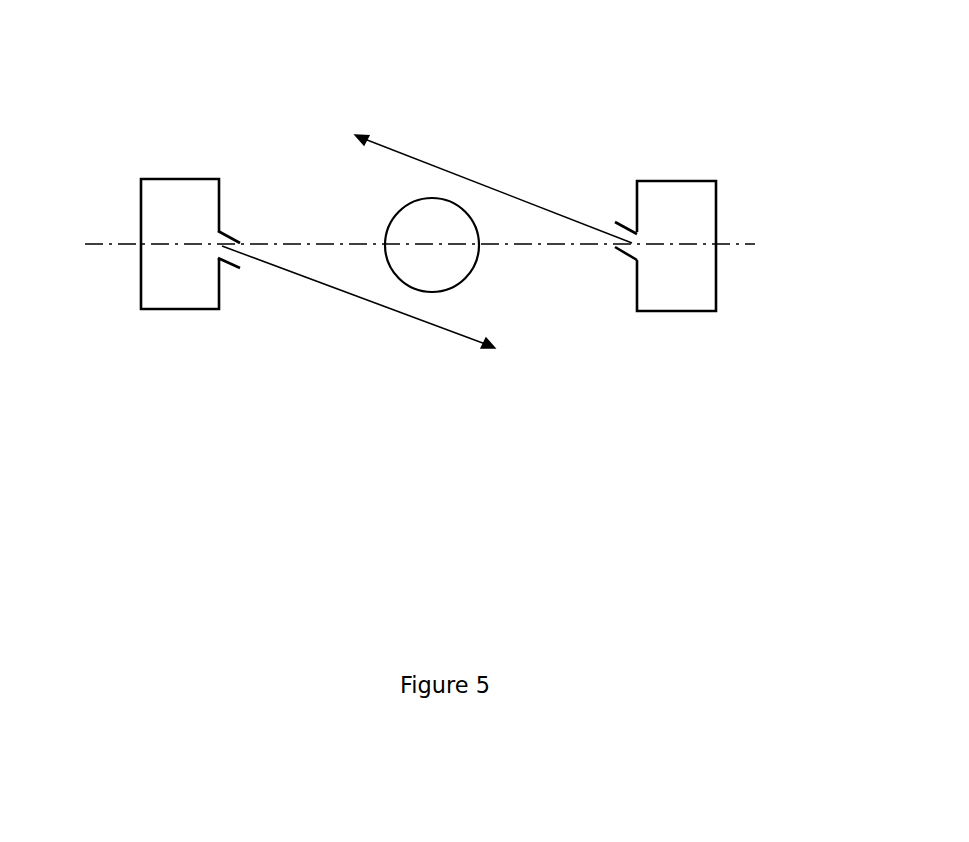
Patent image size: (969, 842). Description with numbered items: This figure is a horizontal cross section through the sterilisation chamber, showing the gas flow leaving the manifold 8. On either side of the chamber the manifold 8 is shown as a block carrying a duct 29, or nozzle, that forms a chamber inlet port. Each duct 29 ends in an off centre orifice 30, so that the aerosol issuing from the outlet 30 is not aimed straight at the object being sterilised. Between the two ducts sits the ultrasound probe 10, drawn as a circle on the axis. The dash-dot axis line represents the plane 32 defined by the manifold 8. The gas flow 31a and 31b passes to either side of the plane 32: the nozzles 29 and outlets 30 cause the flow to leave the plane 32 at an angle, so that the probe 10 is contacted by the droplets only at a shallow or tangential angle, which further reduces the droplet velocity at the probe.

The manifold 8 is at (167, 273).
The probe 10 is at (448, 263).
The duct 29 is at (237, 272).
The off centre orifice 30 is at (247, 250).
The gas flow 31a is at (415, 157).
The gas flow 31b is at (432, 325).
The plane 32 is at (750, 246).